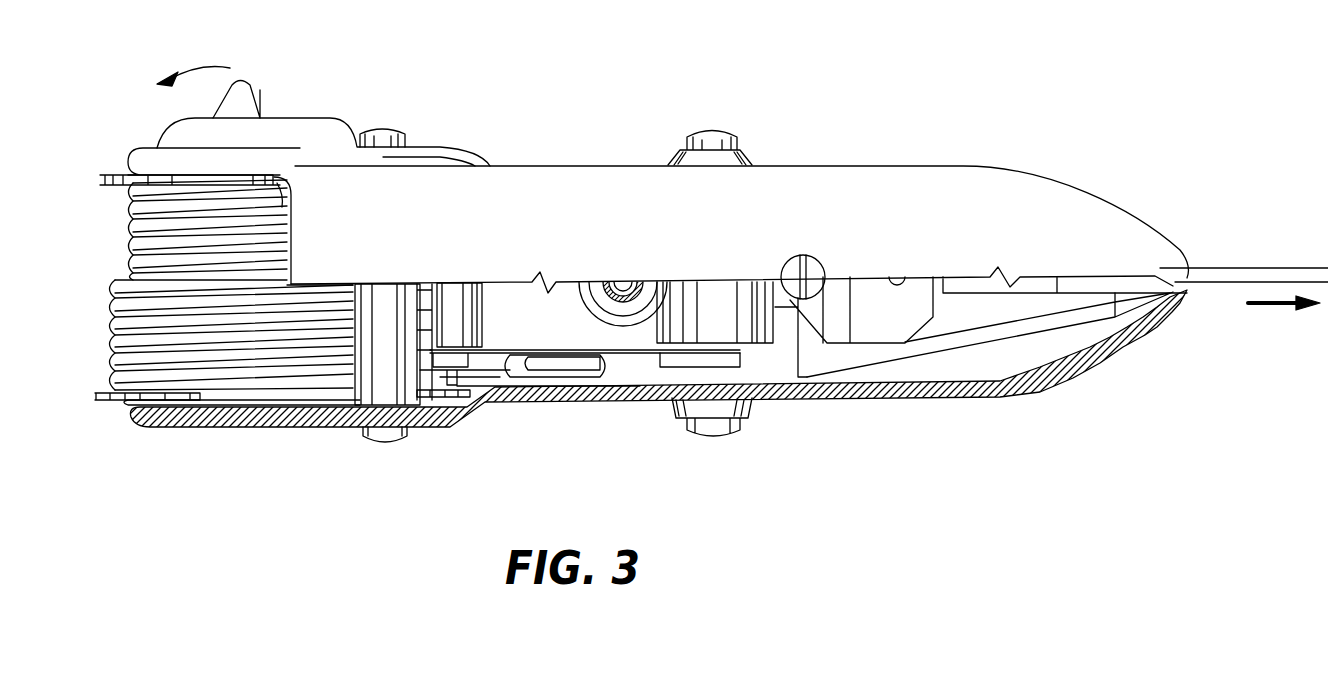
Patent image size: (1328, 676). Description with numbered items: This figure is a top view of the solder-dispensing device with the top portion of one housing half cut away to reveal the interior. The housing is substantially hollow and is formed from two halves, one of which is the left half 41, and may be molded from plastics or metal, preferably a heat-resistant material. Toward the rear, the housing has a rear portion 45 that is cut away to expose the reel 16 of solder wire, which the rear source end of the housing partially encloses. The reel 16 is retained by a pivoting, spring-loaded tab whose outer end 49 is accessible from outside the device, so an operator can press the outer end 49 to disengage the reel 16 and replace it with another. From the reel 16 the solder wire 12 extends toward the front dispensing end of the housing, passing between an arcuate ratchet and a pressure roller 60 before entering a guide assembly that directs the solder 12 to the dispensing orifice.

The solder wire 12 is at (1253, 266).
The reel of solder wire 16 is at (110, 290).
The left half 41 is at (537, 170).
The rear portion 45 is at (283, 177).
The outer end of tab 49 is at (262, 92).
The pressure roller 60 is at (732, 280).